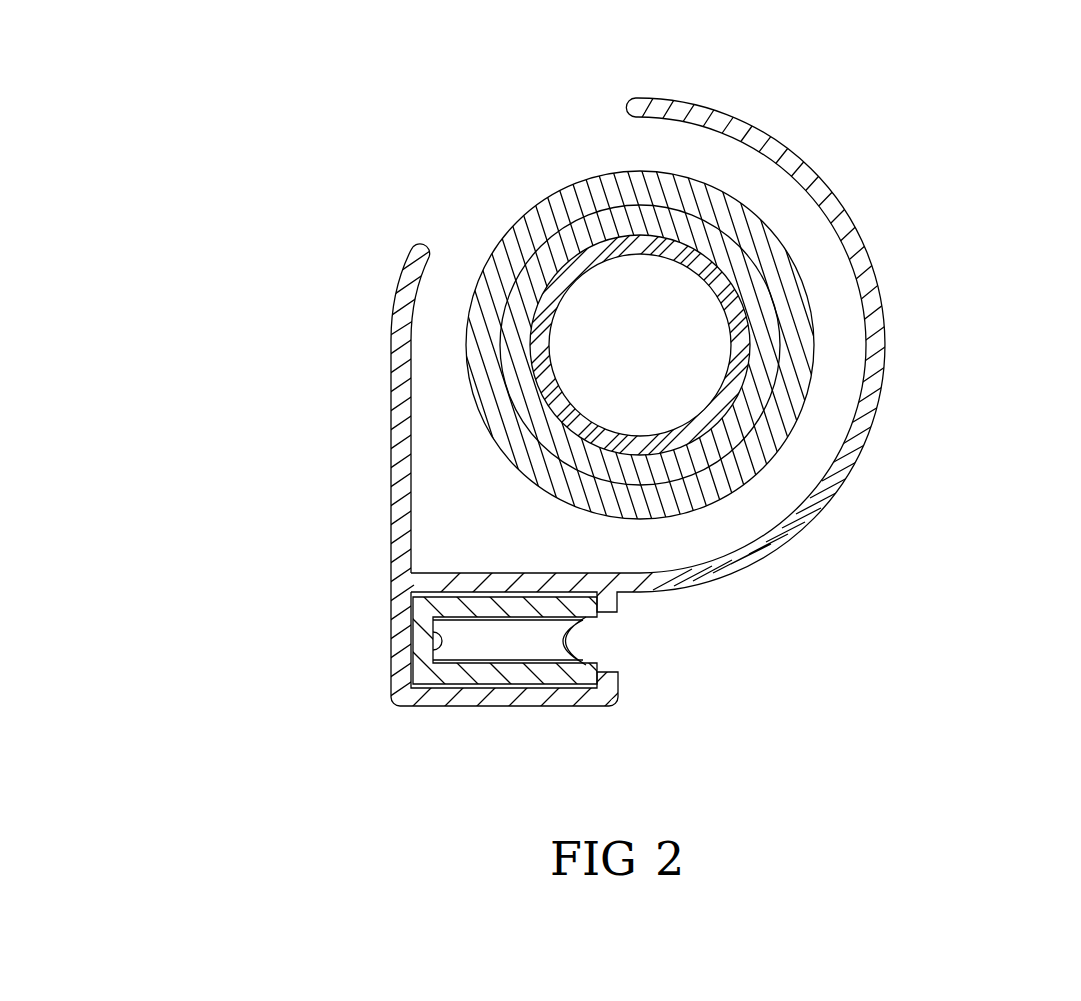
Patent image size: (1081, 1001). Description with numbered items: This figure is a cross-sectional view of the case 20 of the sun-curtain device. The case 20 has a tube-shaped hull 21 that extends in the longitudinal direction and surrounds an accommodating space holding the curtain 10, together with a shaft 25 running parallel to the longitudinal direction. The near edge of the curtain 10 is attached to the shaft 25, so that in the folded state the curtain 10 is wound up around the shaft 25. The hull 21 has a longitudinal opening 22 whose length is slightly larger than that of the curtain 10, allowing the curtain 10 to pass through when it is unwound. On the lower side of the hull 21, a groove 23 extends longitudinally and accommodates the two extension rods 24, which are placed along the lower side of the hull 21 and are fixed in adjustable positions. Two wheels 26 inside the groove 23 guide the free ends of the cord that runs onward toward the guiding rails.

The curtain 10 is at (583, 167).
The case 20 is at (367, 485).
The tube-shaped hull 21 is at (862, 262).
The longitudinal opening 22 is at (455, 205).
The groove 23 is at (440, 705).
The extension rods 24 is at (570, 678).
The shaft 25 is at (687, 435).
The wheels 26 is at (480, 640).